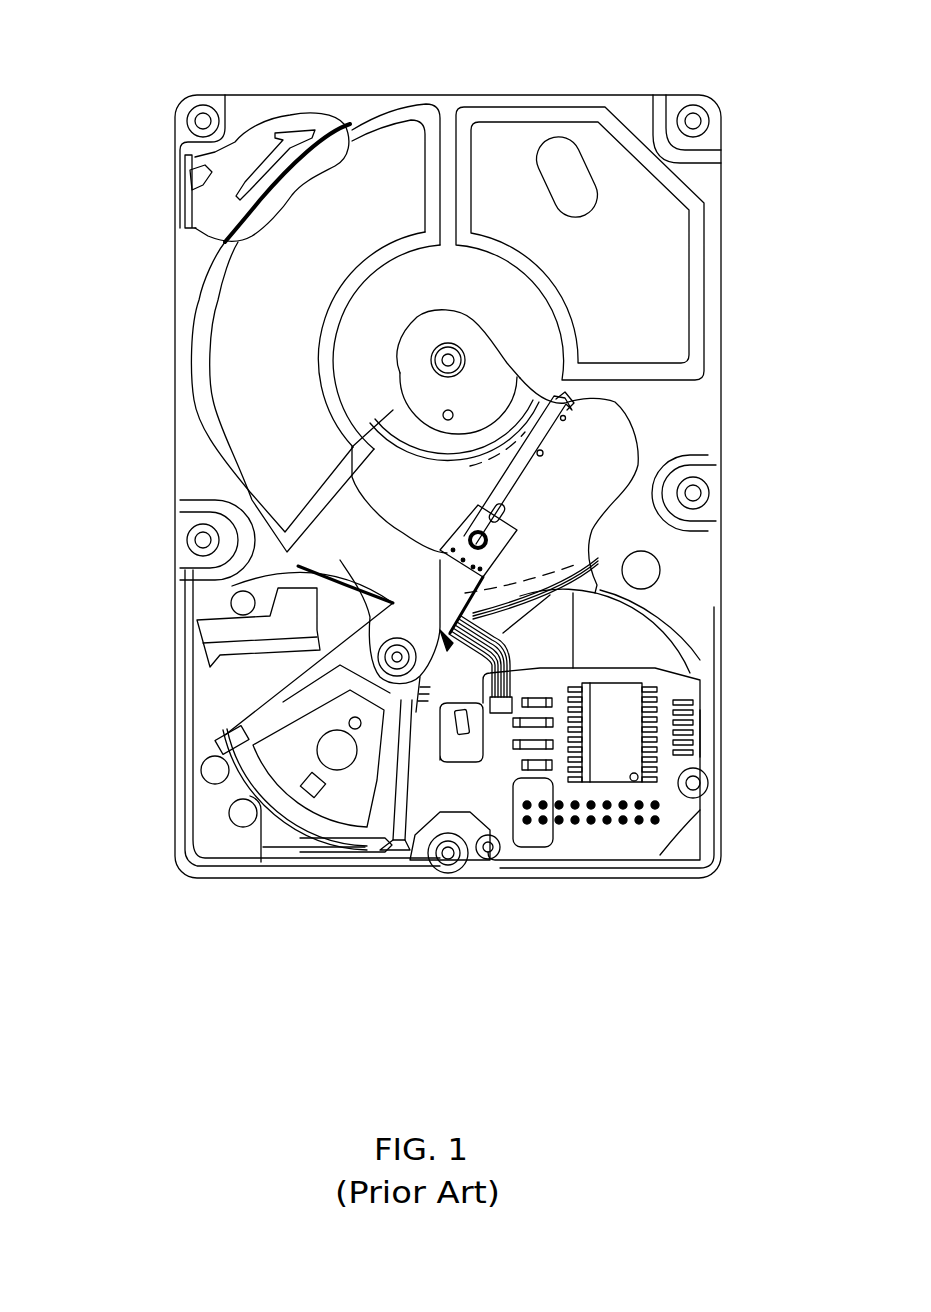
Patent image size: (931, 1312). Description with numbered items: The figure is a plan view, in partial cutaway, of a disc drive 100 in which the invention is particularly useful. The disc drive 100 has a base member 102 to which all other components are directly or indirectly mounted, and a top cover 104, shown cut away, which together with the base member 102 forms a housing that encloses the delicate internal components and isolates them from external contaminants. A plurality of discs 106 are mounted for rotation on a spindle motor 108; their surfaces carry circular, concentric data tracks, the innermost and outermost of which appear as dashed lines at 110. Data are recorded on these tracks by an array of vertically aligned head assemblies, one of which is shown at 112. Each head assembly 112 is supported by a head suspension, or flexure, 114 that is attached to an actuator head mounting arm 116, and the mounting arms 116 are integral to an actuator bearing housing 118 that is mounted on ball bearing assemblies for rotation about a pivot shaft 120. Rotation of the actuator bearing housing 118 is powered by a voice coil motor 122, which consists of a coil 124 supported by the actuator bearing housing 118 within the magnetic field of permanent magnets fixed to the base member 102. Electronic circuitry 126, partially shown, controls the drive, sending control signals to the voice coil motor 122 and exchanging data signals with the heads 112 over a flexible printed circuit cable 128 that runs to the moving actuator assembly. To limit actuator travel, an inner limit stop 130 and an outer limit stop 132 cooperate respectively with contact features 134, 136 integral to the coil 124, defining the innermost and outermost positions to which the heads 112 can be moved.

The disc drive 100 is at (148, 322).
The base member 102 is at (175, 826).
The top cover 104 is at (445, 105).
The discs 106 is at (585, 518).
The spindle motor 108 is at (490, 363).
The data tracks 110 is at (487, 465).
The head assembly 112 is at (590, 398).
The head suspension 114 is at (523, 478).
The actuator head mounting arm 116 is at (578, 568).
The actuator bearing housing 118 is at (393, 603).
The pivot shaft 120 is at (426, 636).
The voice coil motor 122 is at (290, 835).
The coil 124 is at (267, 780).
The electronic circuitry 126 is at (680, 702).
The flexible printed circuit cable 128 is at (672, 608).
The inner limit stop 130 is at (403, 856).
The outer limit stop 132 is at (203, 645).
The contact feature 134 is at (387, 852).
The contact feature 136 is at (236, 742).